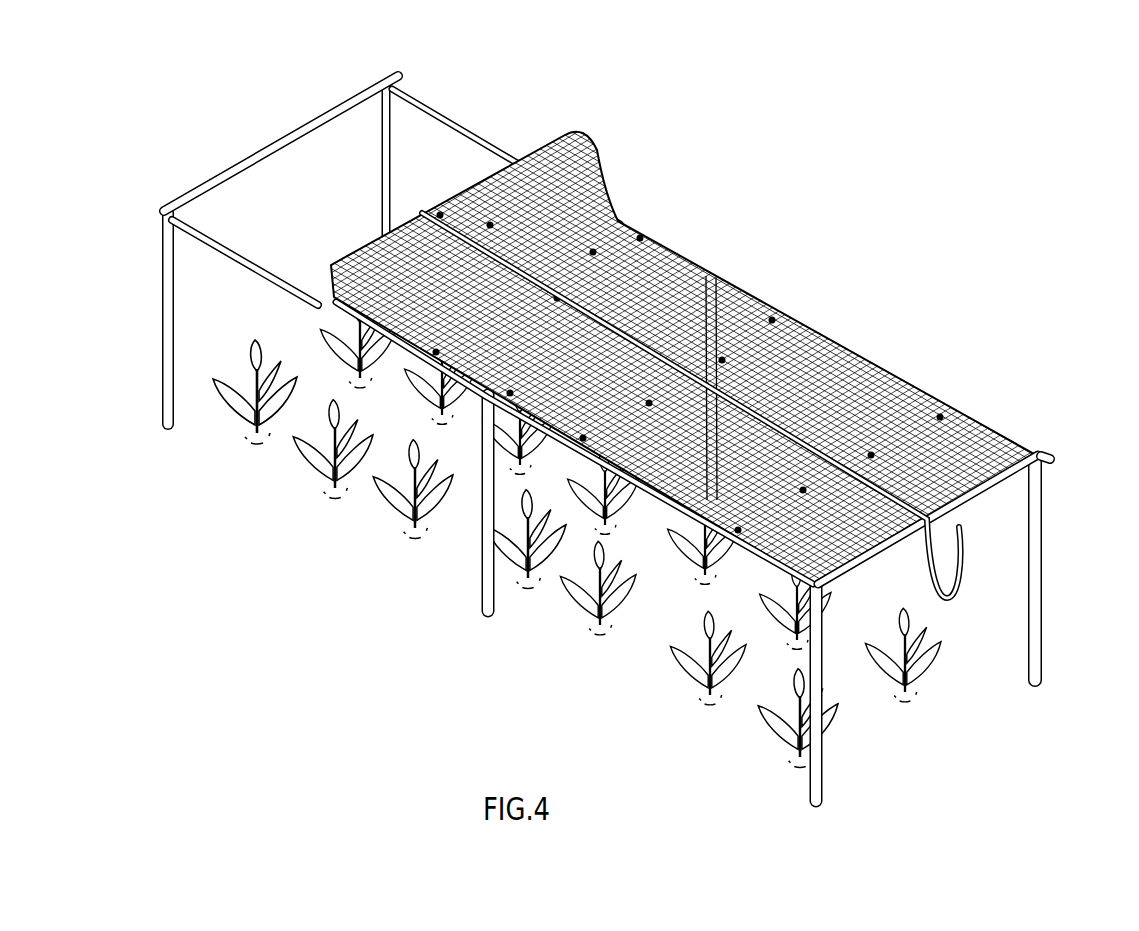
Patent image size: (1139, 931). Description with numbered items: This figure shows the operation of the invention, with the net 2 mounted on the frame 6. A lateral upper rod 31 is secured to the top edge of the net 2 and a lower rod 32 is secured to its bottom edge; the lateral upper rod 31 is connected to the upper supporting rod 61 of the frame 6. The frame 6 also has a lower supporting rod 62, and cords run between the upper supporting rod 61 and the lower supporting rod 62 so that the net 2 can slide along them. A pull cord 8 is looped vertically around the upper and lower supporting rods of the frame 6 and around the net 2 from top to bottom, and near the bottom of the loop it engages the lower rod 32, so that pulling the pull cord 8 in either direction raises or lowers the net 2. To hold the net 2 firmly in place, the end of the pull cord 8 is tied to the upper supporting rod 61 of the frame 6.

The net 2 is at (723, 272).
The frame 6 is at (1044, 606).
The pull cord 8 is at (960, 566).
The lateral upper rod 31 is at (1040, 452).
The lower rod 32 is at (322, 300).
The upper supporting rod 61 is at (1052, 458).
The lower supporting rod 62 is at (406, 75).